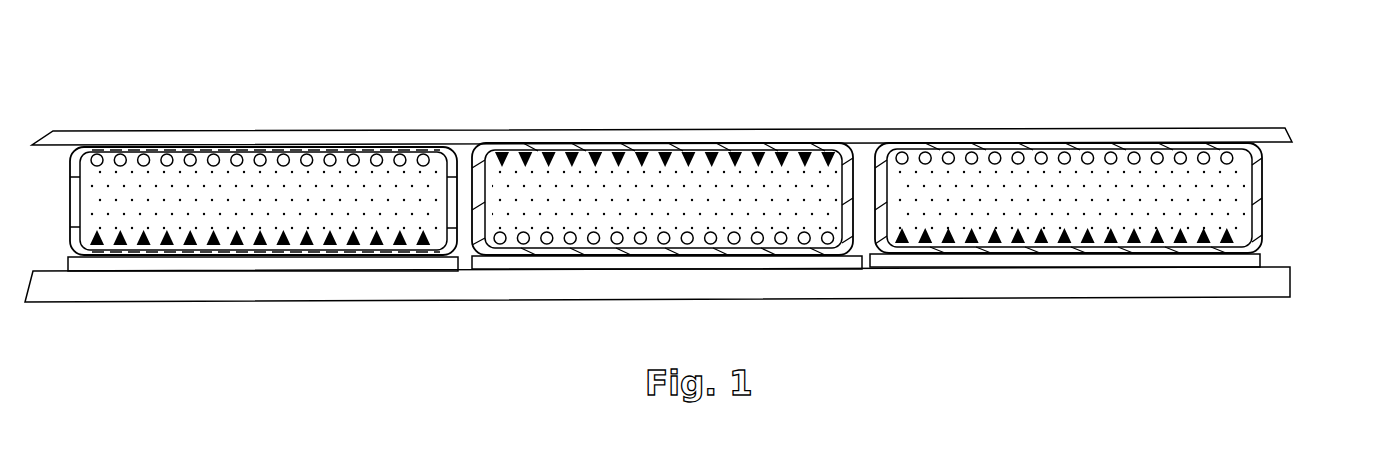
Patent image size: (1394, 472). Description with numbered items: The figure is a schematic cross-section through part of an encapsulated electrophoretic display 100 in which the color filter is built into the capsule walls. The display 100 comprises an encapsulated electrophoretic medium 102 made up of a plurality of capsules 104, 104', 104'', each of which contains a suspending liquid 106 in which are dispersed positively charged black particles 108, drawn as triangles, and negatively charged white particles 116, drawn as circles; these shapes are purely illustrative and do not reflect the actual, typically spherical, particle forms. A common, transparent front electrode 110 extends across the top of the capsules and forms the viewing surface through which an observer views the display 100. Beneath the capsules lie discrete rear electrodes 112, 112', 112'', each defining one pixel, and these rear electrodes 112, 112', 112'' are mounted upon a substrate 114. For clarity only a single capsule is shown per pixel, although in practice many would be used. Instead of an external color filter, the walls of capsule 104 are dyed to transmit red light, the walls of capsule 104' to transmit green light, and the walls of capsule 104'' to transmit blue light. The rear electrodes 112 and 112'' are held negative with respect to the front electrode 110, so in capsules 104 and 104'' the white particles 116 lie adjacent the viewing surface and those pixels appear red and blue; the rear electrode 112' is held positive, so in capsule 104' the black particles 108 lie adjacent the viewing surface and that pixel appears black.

The encapsulated electrophoretic display 100 is at (595, 105).
The encapsulated electrophoretic medium 102 is at (1274, 169).
The capsule 104 is at (1126, 198).
The capsule 104' is at (673, 159).
The capsule 104'' is at (283, 161).
The suspending liquid 106 is at (1182, 203).
The black particles 108 is at (1045, 228).
The common transparent front electrode 110 is at (1100, 128).
The rear electrode 112 is at (1123, 231).
The rear electrode 112' is at (731, 300).
The rear electrode 112'' is at (326, 300).
The substrate 114 is at (1290, 277).
The white particles 116 is at (972, 153).